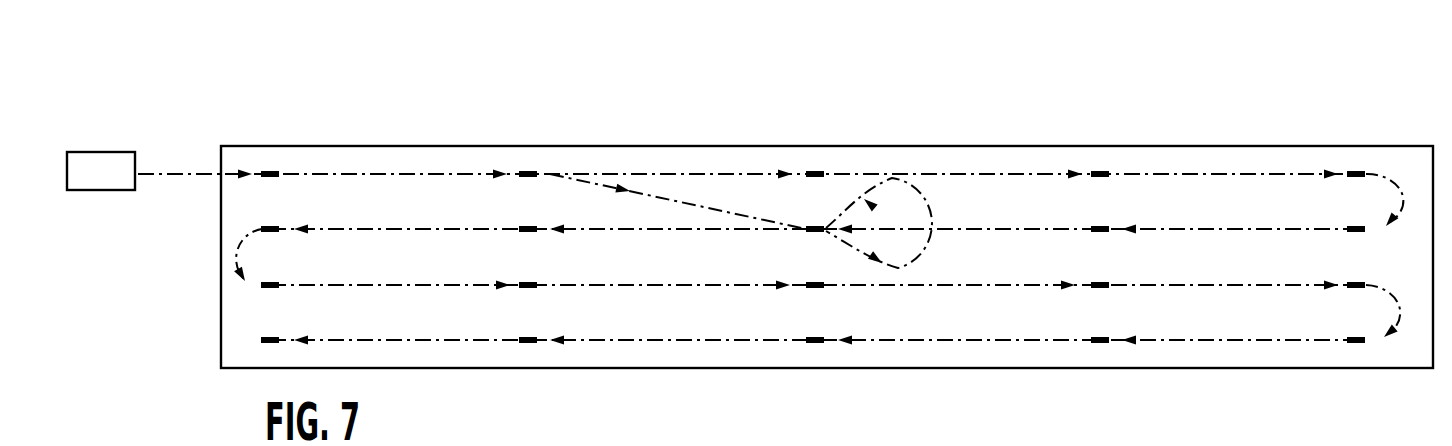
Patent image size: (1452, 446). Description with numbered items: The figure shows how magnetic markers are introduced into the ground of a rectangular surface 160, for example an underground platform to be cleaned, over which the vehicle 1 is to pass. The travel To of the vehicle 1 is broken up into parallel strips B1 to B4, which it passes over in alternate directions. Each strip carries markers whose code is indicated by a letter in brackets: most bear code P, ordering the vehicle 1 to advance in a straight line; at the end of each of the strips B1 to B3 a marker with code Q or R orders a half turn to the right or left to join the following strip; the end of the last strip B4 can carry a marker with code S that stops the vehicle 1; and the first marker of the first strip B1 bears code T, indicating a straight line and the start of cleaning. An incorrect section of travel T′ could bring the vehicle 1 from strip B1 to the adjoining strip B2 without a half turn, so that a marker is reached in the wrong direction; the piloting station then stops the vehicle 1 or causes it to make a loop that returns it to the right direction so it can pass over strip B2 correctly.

The vehicle 1 is at (103, 161).
The rectangular surface 160 is at (732, 387).
The incorrect section of travel T′ is at (665, 200).
The travel To is at (1272, 173).
The first strip B1 is at (997, 174).
The second strip B2 is at (960, 229).
The third strip B3 is at (975, 287).
The last strip B4 is at (980, 342).